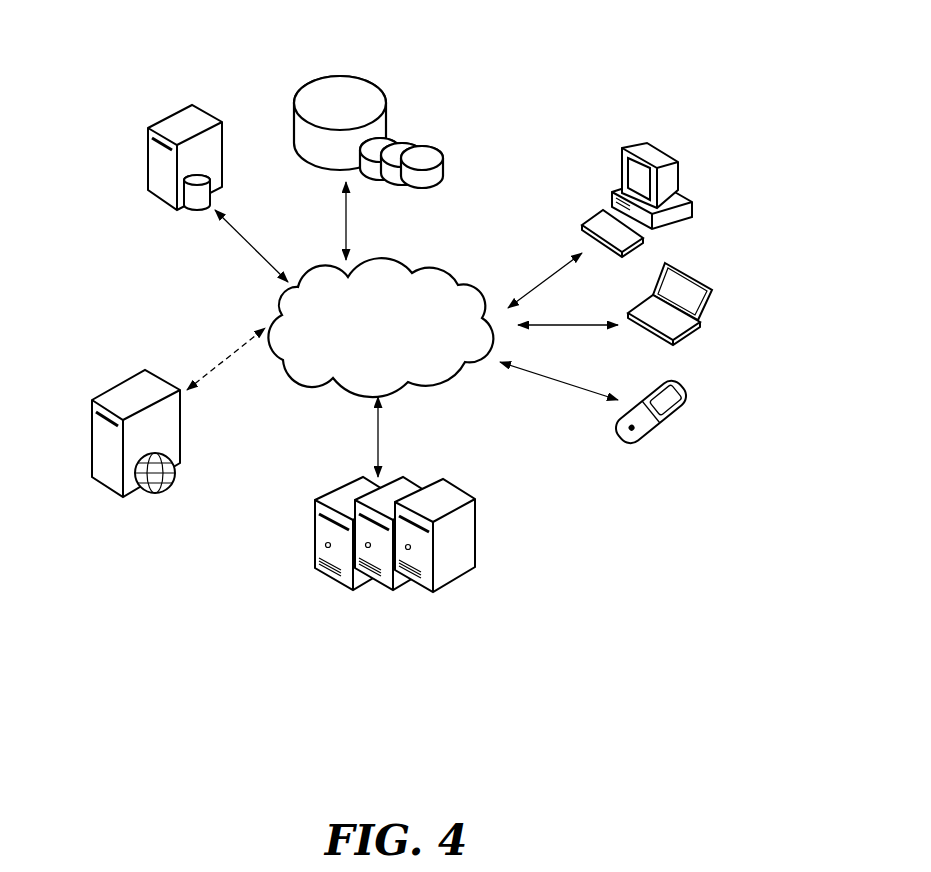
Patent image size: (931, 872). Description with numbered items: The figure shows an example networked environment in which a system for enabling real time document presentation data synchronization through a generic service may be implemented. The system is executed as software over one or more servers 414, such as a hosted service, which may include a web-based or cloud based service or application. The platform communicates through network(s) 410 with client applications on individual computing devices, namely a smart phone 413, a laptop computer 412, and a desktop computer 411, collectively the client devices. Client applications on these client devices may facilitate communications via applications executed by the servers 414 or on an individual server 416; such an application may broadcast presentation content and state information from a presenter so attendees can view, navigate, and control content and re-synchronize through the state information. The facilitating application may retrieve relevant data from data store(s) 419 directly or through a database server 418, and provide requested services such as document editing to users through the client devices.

The network(s) 410 is at (383, 258).
The desktop computer 411 is at (675, 135).
The laptop computer 412 is at (708, 265).
The smart phone 413 is at (680, 382).
The servers 414 is at (343, 478).
The individual server 416 is at (117, 382).
The database server 418 is at (187, 218).
The data store(s) 419 is at (355, 58).